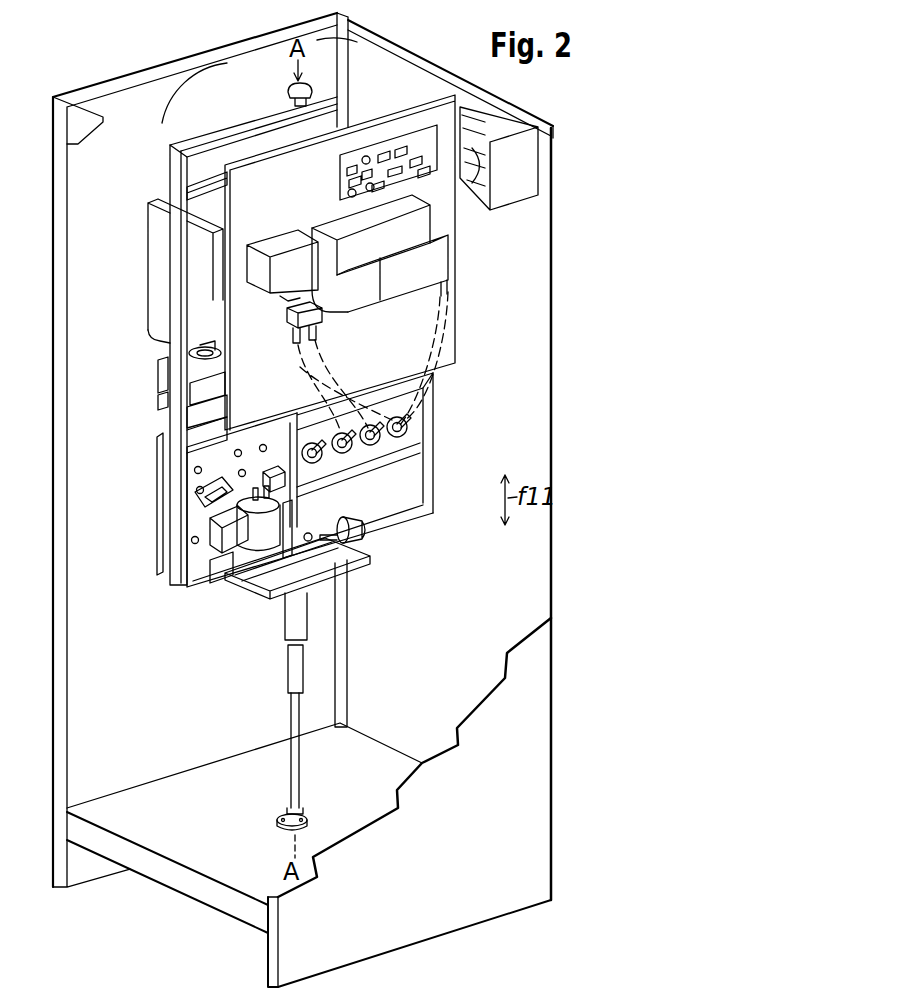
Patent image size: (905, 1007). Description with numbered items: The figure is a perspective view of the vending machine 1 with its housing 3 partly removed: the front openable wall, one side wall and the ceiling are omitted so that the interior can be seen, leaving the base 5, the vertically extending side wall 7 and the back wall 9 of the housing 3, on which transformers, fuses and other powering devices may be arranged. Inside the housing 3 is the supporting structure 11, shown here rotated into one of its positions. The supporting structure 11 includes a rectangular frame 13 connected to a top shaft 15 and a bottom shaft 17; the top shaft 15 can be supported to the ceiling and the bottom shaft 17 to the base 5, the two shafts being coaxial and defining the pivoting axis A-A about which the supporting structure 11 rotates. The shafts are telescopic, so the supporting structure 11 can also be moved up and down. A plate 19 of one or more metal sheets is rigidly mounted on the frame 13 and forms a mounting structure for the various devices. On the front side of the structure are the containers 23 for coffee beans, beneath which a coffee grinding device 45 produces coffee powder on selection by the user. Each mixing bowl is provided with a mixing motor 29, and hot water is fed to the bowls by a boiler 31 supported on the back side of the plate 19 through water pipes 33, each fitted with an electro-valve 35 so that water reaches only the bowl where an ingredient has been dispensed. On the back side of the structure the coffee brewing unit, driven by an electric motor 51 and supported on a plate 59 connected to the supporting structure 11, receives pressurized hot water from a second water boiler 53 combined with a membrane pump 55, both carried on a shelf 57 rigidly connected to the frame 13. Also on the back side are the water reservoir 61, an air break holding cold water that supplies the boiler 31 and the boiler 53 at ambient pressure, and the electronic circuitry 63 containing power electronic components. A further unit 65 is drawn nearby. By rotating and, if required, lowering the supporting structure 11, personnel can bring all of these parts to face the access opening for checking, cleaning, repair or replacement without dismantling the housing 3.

The vending machine 1 is at (155, 918).
The housing 3 is at (385, 705).
The base 5 is at (262, 890).
The side wall 7 is at (92, 576).
The back wall 9 is at (517, 566).
The supporting structure 11 is at (440, 468).
The rectangular frame 13 is at (197, 180).
The top shaft 15 is at (288, 86).
The bottom shaft 17 is at (290, 667).
The plate 19 is at (250, 172).
The container for coffee beans 23 is at (156, 266).
The mixing motor 29 is at (410, 433).
The boiler 31 is at (447, 263).
The water pipes 33 is at (307, 379).
The electro-valve 35 is at (288, 316).
The coffee grinding device 45 is at (200, 352).
The electric motor 51 is at (247, 515).
The second water boiler 53 is at (225, 578).
The membrane pump 55 is at (367, 533).
The shelf 57 is at (318, 572).
The plate 59 is at (157, 462).
The water reservoir 61 is at (288, 243).
The electronic circuitry 63 is at (433, 180).
The indicator unit 65 is at (527, 171).